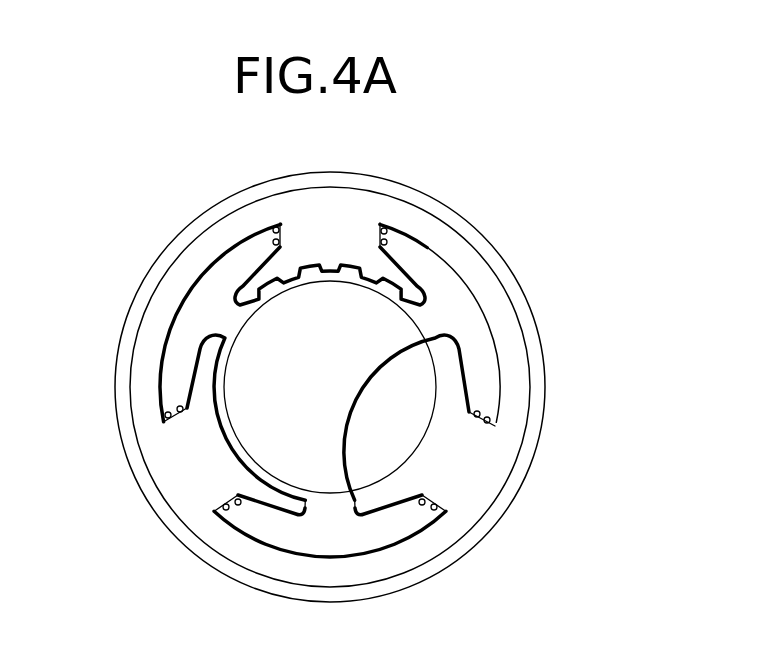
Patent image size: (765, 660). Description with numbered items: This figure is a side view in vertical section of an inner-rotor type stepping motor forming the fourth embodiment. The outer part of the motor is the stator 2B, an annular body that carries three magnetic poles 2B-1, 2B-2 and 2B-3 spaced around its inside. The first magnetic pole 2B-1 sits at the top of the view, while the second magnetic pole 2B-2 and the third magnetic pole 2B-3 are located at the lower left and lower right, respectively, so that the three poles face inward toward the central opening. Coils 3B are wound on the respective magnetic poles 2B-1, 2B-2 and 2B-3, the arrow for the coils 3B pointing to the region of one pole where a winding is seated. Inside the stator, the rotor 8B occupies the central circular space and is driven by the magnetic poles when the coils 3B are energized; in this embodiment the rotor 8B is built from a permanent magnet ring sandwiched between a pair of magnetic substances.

The stator 2B is at (218, 243).
The magnetic pole 2B-1 is at (355, 230).
The magnetic pole 2B-2 is at (203, 430).
The magnetic pole 2B-3 is at (460, 474).
The coils 3B is at (414, 241).
The rotor 8B is at (385, 368).